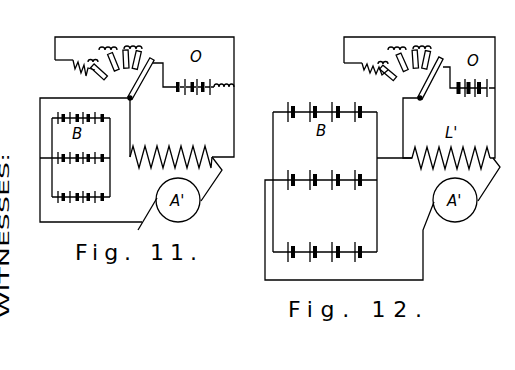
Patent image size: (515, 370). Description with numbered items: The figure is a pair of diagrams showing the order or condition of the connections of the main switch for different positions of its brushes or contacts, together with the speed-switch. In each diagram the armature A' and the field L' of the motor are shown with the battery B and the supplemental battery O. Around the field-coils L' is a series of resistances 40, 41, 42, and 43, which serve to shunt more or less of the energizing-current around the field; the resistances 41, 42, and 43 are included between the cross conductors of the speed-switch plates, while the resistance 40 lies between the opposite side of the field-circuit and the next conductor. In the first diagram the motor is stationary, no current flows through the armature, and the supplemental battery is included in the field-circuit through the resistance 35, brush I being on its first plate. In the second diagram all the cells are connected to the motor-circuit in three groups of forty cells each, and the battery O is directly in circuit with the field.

The resistance 35 is at (224, 76).
The resistance 40 is at (83, 74).
The resistance 41 is at (92, 63).
The resistance 42 is at (110, 46).
The resistance 43 is at (138, 44).